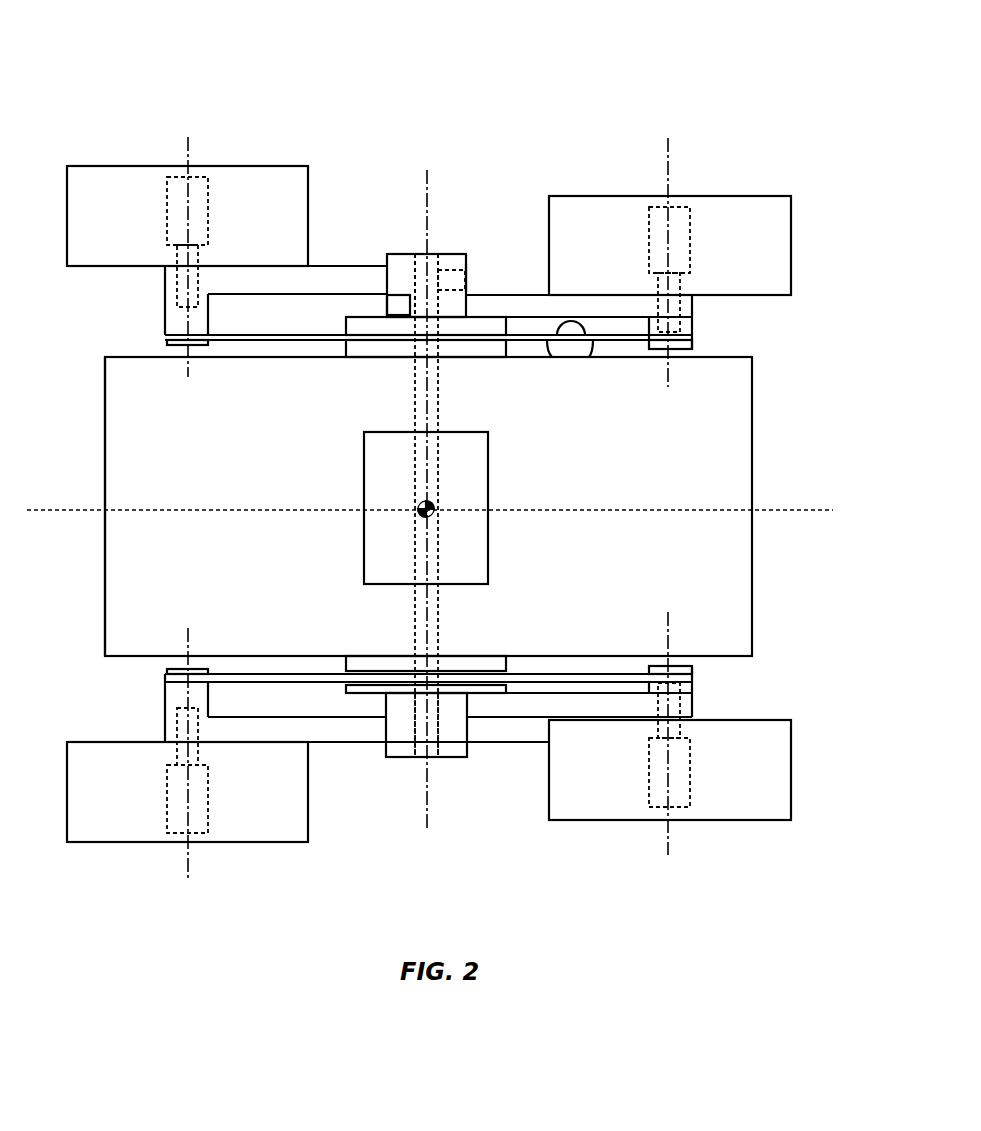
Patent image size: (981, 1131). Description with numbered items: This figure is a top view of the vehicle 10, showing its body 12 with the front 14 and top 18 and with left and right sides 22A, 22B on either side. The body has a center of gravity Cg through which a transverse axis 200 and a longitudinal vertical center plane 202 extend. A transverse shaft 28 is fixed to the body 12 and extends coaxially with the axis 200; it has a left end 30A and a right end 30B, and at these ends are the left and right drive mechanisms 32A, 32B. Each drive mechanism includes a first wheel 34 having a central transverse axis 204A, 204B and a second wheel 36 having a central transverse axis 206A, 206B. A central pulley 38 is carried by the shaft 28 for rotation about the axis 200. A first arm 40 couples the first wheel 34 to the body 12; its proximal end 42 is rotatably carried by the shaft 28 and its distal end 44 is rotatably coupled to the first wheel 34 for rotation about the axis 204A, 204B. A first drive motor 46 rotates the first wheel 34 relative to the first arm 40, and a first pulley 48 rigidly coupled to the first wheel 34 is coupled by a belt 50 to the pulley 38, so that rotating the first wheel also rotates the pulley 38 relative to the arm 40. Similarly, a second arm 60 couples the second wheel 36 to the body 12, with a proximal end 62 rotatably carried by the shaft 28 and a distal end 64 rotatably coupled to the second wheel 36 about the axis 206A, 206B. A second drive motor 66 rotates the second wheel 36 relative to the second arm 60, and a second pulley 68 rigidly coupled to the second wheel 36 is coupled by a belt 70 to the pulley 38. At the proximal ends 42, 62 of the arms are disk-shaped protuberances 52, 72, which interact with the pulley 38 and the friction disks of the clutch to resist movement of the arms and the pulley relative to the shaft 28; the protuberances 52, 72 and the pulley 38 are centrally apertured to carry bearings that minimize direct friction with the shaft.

The vehicle 10 is at (221, 56).
The body 12 is at (122, 571).
The front 14 is at (103, 532).
The top 18 is at (115, 630).
The left side 22A is at (495, 686).
The right side 22B is at (588, 358).
The transverse shaft 28 is at (439, 272).
The left end 30A is at (383, 752).
The right end 30B is at (431, 254).
The left drive mechanism 32A is at (422, 779).
The right drive mechanism 32B is at (419, 221).
The first wheel 34 is at (133, 187).
The second wheel 36 is at (762, 279).
The central pulley 38 is at (377, 355).
The first arm 40 is at (285, 275).
The proximal end 42 is at (469, 272).
The distal end 44 is at (162, 282).
The first drive motor 46 is at (178, 198).
The first pulley 48 is at (172, 322).
The belt 50 is at (217, 363).
The disk-shaped protuberance 52 is at (467, 283).
The second arm 60 is at (570, 303).
The proximal end 62 is at (386, 281).
The distal end 64 is at (696, 308).
The second drive motor 66 is at (688, 246).
The second pulley 68 is at (693, 330).
The belt 70 is at (641, 349).
The disk-shaped protuberance 72 is at (400, 304).
The transverse axis 200 is at (429, 182).
The longitudinal vertical center plane 202 is at (452, 481).
The central transverse axis 204A is at (135, 775).
The central transverse axis 204B is at (189, 153).
The central transverse axis 206A is at (722, 751).
The central transverse axis 206B is at (670, 151).
The center of gravity Cg is at (427, 514).